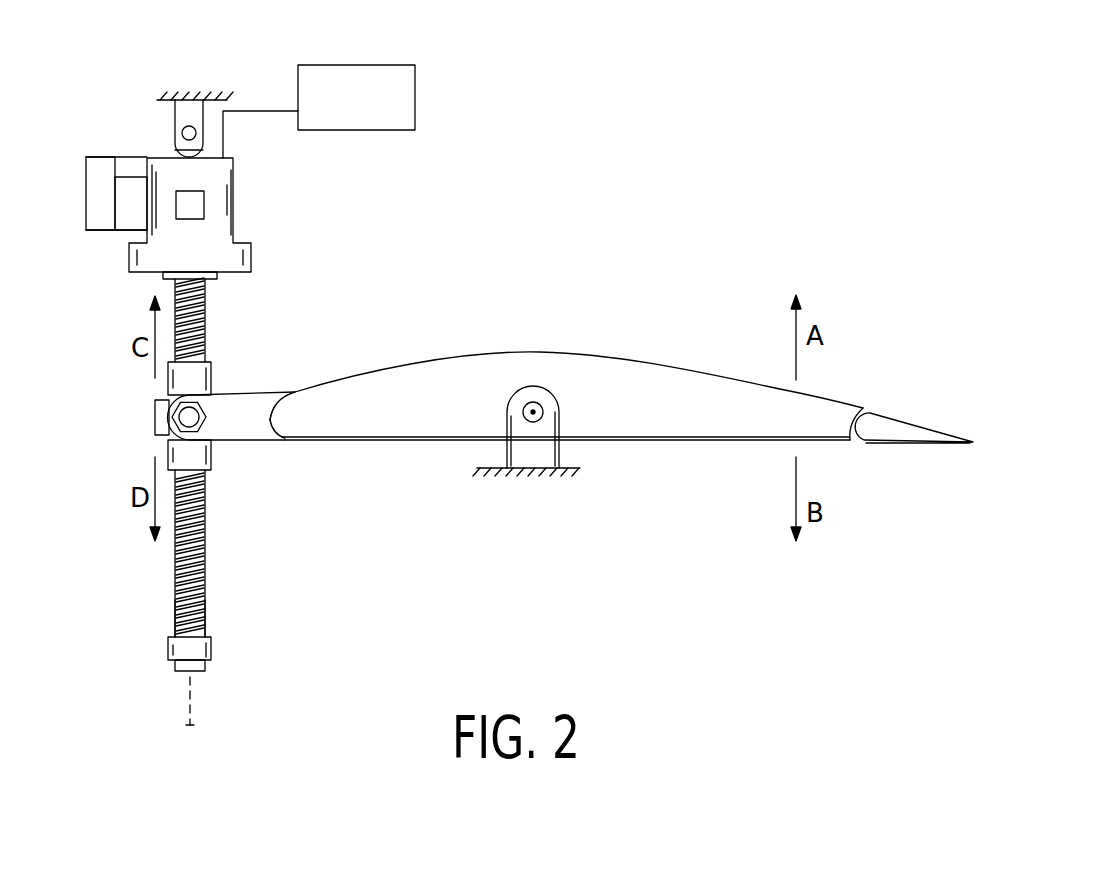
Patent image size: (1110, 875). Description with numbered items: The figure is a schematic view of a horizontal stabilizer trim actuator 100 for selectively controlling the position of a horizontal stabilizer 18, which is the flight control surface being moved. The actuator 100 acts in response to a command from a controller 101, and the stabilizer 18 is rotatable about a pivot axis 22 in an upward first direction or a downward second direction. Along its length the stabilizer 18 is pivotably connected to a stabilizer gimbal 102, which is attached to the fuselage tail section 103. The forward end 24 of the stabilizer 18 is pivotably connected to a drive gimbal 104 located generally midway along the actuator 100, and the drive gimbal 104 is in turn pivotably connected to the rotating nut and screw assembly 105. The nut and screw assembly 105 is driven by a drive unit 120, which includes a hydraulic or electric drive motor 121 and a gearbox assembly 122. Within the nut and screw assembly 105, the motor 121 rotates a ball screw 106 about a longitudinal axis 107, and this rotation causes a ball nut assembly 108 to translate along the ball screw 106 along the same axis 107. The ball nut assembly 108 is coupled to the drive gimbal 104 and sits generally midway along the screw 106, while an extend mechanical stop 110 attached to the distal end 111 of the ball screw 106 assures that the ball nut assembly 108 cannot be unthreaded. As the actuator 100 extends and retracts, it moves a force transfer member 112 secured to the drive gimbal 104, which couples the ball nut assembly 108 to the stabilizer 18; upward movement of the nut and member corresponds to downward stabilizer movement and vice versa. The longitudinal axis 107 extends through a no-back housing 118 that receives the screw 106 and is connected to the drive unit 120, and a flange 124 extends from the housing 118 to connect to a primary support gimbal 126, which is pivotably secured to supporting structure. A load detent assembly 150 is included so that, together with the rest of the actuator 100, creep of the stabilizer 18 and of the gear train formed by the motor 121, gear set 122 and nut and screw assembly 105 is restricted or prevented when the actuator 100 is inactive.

The horizontal stabilizer 18 is at (537, 352).
The pivot axis 22 is at (527, 417).
The forward end of the horizontal stabilizer 24 is at (310, 407).
The horizontal stabilizer trim actuator 100 is at (113, 377).
The controller 101 is at (383, 112).
The stabilizer gimbal 102 is at (541, 405).
The fuselage tail section 103 is at (198, 100).
The drive gimbal 104 is at (155, 420).
The nut and screw assembly 105 is at (245, 460).
The ball screw 106 is at (175, 548).
The longitudinal axis 107 is at (190, 722).
The ball nut assembly 108 is at (203, 377).
The extend mechanical stop 110 is at (168, 650).
The distal end of the ball screw 111 is at (220, 625).
The force transfer member 112 is at (245, 405).
The no-back housing 118 is at (238, 205).
The drive unit 120 is at (78, 143).
The drive motor 121 is at (100, 210).
The gearbox assembly 122 is at (132, 187).
The flange 124 is at (207, 147).
The primary support gimbal 126 is at (175, 115).
The load detent assembly 150 is at (185, 222).